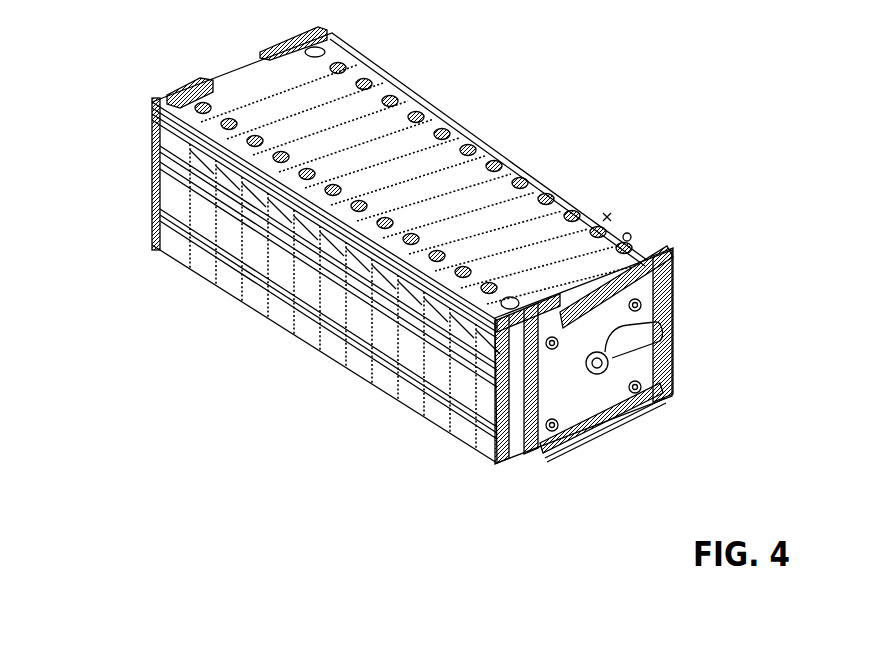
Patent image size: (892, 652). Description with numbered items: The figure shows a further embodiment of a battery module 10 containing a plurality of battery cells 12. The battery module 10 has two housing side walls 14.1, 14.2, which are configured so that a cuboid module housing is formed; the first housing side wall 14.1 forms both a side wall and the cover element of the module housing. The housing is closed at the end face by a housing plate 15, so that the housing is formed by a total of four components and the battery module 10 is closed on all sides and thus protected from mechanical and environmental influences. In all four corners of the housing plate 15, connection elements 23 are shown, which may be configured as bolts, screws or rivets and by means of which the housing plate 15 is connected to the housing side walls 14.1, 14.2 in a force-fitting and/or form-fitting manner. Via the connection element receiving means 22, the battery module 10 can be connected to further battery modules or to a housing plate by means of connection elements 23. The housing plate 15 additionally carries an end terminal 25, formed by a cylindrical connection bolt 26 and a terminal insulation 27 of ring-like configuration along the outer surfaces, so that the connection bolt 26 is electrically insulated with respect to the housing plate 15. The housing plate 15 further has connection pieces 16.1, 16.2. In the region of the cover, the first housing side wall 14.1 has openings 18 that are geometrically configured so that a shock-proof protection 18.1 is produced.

The battery module 10 is at (177, 81).
The battery cells 12 is at (243, 292).
The first housing side wall 14.1 is at (248, 78).
The second housing side wall 14.2 is at (637, 238).
The housing plate 15 is at (150, 150).
The first connection piece 16.1 is at (560, 447).
The second connection piece 16.2 is at (628, 430).
The openings 18 is at (352, 37).
The shock-proof protection 18.1 is at (627, 237).
The connection element receiving means 22 is at (500, 470).
The connection elements 23 is at (672, 270).
The end terminal 25 is at (660, 340).
The connection bolt 26 is at (664, 368).
The terminal insulation 27 is at (662, 324).